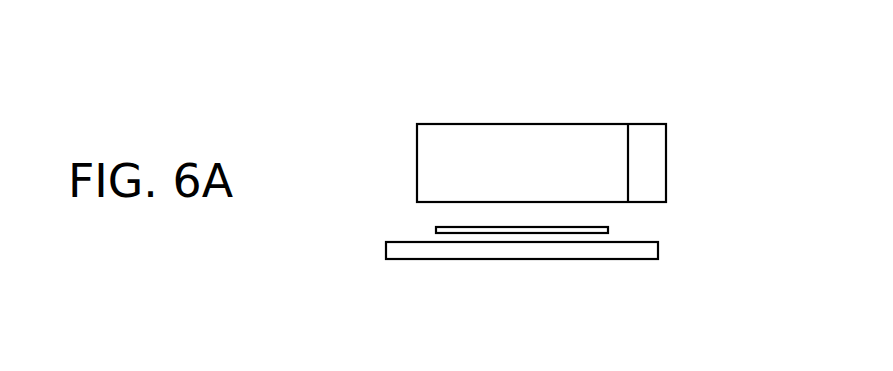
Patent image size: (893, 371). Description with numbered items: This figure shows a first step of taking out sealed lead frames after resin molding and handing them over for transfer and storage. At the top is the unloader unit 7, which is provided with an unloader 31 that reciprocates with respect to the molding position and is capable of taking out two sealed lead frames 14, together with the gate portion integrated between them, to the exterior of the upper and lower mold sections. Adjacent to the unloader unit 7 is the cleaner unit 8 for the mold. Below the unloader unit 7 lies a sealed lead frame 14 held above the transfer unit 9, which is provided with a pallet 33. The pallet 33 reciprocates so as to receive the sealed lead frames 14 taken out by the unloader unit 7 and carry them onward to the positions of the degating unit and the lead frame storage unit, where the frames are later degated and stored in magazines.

The unloader unit 7 is at (509, 111).
The cleaner unit 8 is at (648, 122).
The unloader 31 is at (447, 161).
The lead frame 14 is at (487, 227).
The transfer unit 9 is at (569, 260).
The pallet 33 is at (585, 252).